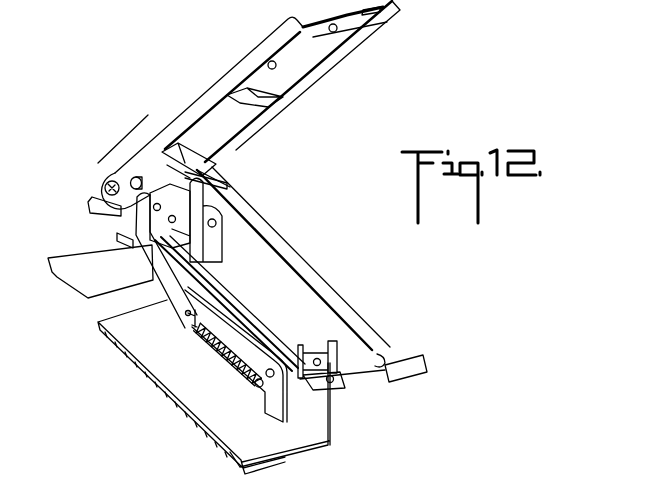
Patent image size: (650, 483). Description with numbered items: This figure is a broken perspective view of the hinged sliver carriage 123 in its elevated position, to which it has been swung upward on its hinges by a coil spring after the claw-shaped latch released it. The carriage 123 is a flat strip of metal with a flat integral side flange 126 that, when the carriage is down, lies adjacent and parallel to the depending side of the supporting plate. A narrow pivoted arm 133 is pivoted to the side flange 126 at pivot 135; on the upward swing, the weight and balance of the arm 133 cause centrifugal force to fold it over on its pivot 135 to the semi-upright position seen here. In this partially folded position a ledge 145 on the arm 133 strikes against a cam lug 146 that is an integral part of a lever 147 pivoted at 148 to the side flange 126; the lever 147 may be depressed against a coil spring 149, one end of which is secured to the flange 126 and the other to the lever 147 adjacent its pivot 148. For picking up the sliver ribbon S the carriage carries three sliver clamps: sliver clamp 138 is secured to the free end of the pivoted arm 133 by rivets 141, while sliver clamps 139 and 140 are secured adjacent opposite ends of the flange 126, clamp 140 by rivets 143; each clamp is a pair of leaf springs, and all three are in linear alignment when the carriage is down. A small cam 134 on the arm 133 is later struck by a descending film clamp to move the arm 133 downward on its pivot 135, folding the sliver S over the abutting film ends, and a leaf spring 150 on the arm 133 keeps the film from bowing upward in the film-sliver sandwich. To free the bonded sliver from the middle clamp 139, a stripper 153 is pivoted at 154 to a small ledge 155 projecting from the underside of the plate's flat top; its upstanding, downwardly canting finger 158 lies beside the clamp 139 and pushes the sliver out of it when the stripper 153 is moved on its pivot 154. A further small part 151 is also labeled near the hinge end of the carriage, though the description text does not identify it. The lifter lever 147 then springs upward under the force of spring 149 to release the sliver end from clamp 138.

The hinged sliver carriage 123 is at (138, 347).
The side flange 126 is at (315, 430).
The pivoted arm 133 is at (205, 94).
The cam 134 is at (133, 162).
The pivot 135 is at (112, 181).
The sliver clamp 138 is at (389, 12).
The sliver clamp 139 is at (216, 171).
The sliver clamp 140 is at (392, 372).
The rivets 141 is at (335, 32).
The rivets 143 is at (321, 362).
The ledge 145 is at (193, 158).
The cam lug 146 is at (120, 214).
The lever 147 is at (193, 284).
The pivot 148 is at (167, 220).
The coil spring 149 is at (208, 350).
The leaf spring 150 is at (270, 106).
The tab 151 is at (118, 241).
The stripper 153 is at (232, 221).
The pivot 154 is at (218, 223).
The ledge 155 is at (73, 270).
The finger 158 is at (227, 185).
The sliver ribbon S is at (306, 75).